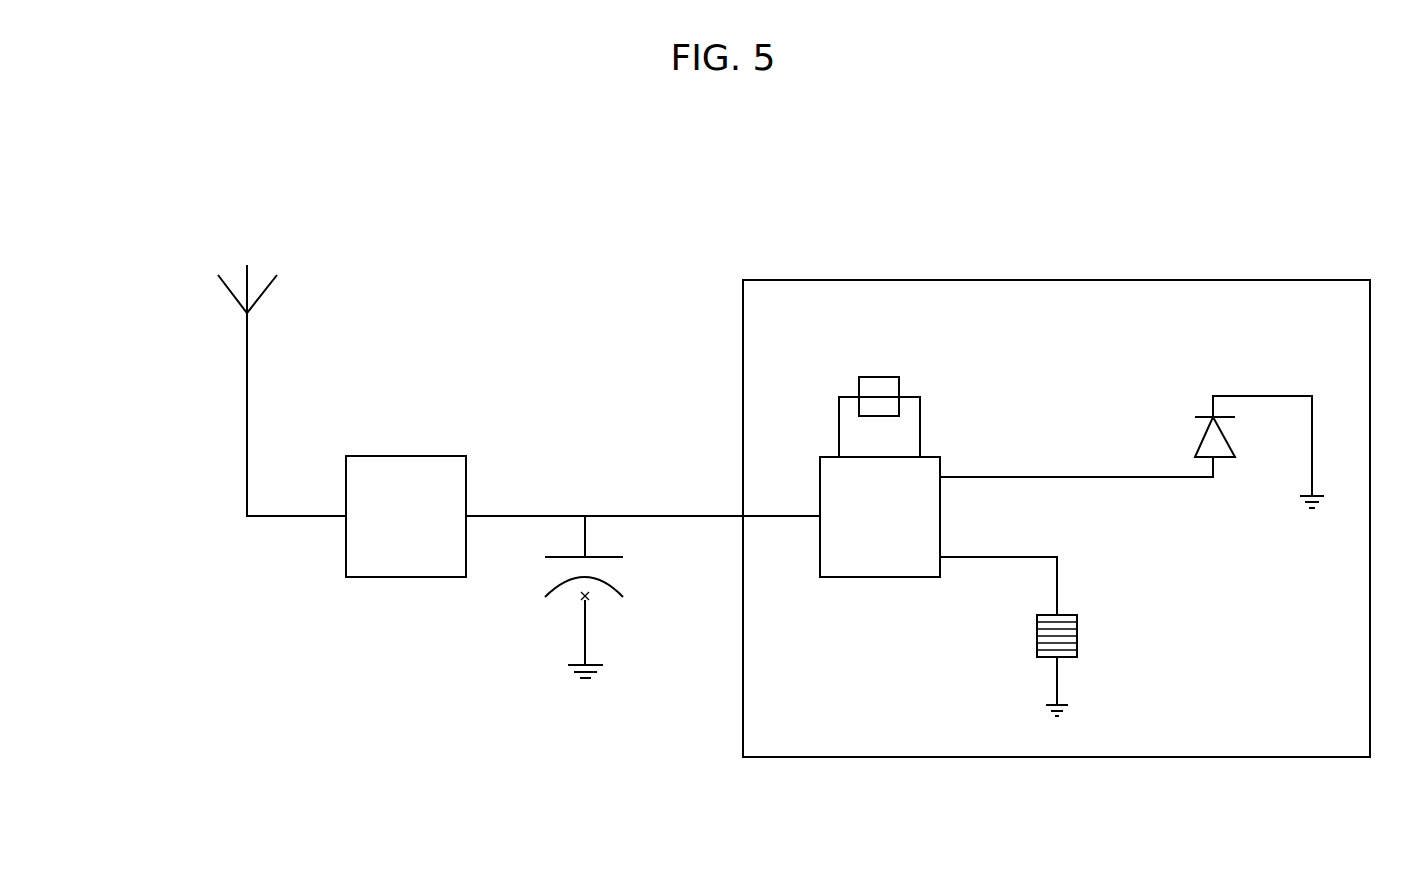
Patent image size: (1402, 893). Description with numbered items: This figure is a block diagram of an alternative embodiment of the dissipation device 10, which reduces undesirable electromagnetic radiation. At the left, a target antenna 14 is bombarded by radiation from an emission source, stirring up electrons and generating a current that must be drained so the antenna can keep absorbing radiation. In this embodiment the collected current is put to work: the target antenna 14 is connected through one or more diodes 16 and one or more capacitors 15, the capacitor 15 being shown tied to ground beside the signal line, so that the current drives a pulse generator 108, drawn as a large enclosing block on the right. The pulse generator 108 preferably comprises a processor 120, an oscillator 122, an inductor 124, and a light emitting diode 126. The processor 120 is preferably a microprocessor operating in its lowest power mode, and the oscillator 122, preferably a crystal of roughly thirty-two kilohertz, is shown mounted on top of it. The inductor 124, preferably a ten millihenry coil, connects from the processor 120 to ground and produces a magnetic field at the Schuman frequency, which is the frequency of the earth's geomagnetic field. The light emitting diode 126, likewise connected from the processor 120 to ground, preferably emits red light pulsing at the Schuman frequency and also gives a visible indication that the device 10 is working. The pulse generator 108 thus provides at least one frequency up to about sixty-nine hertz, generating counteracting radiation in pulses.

The dissipation device 10 is at (198, 738).
The target antenna 14 is at (228, 297).
The capacitor 15 is at (553, 590).
The diode 16 is at (405, 456).
The pulse generator 108 is at (1182, 757).
The processor 120 is at (820, 477).
The oscillator 122 is at (888, 377).
The inductor 124 is at (1037, 635).
The light emitting diode 126 is at (1200, 437).